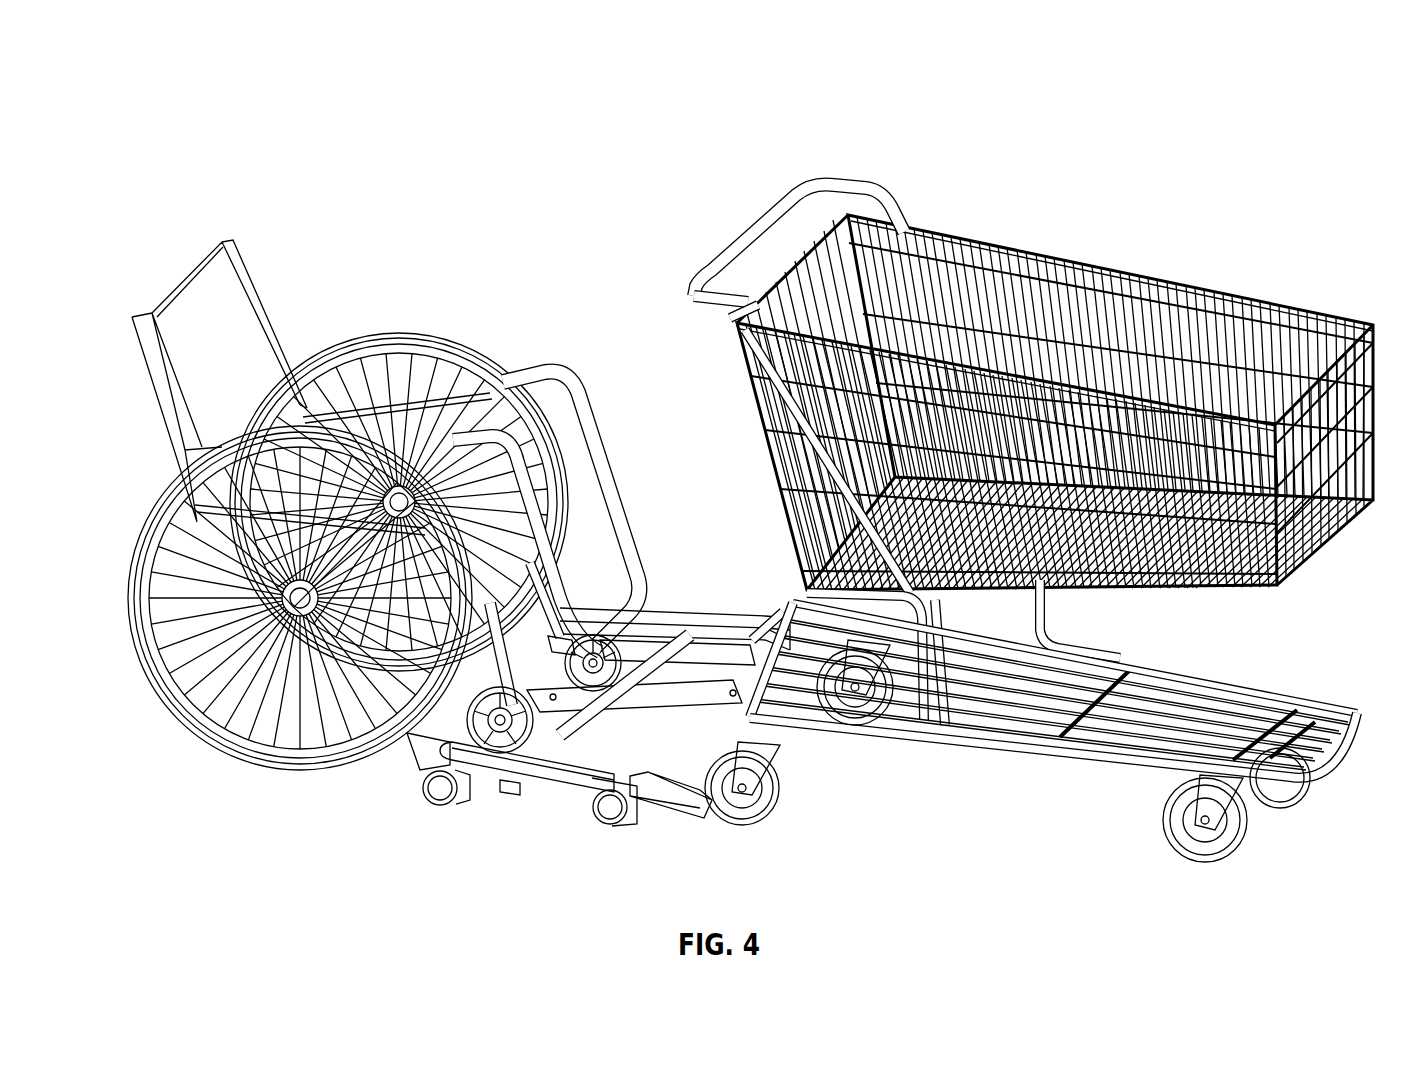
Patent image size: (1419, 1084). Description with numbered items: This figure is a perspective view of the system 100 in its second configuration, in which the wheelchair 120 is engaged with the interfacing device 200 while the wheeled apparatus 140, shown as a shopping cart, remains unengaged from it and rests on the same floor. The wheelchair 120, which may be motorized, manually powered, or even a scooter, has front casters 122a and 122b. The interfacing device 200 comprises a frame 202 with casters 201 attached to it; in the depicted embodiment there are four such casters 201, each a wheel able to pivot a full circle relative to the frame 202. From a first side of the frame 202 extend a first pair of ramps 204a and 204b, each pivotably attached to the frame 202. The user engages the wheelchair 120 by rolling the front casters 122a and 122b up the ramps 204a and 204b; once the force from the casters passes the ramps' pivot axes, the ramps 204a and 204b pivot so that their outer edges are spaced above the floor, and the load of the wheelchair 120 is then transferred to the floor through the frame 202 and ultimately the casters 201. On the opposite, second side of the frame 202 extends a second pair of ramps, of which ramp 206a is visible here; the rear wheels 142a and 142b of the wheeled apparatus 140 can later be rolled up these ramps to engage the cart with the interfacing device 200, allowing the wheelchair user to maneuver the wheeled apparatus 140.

The system 100 is at (750, 476).
The wheelchair 120 is at (438, 505).
The front caster 122a is at (538, 713).
The front caster 122b is at (660, 613).
The wheeled apparatus 140 is at (1033, 518).
The rear wheel 142a is at (776, 820).
The rear wheel 142b is at (866, 722).
The interfacing device 200 is at (564, 685).
The caster 201 is at (593, 816).
The frame 202 is at (497, 768).
The ramp 204a is at (407, 763).
The ramp 204b is at (532, 622).
The ramp 206a is at (703, 814).